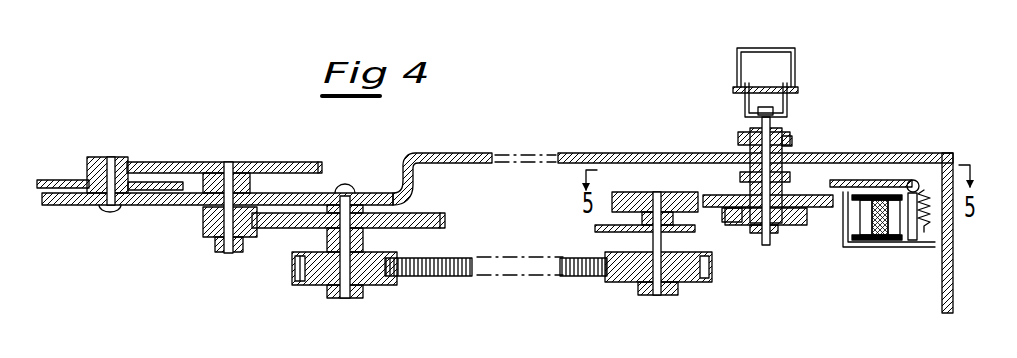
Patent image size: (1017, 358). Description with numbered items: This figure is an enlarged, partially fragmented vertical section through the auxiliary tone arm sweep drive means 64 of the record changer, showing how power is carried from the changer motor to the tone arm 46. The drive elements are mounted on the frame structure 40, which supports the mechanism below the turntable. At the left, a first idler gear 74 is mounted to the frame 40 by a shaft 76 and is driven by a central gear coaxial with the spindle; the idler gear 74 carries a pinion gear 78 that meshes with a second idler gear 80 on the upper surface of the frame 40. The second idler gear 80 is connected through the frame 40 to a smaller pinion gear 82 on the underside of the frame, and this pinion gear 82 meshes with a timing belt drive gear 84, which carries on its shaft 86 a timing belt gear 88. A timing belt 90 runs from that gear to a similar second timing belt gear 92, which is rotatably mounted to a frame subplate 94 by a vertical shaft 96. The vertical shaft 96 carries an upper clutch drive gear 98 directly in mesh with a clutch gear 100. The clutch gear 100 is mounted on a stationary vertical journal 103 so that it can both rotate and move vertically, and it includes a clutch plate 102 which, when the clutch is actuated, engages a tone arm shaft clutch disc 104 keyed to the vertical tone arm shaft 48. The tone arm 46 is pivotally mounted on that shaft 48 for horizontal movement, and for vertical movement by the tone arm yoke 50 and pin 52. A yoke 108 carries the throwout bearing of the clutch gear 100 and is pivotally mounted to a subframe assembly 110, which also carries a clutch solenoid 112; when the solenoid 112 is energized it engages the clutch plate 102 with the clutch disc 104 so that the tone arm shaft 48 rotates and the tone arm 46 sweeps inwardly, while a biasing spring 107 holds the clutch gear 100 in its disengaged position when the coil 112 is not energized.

The frame structure 40 is at (431, 153).
The tone arm 46 is at (778, 48).
The tone arm shaft 48 is at (790, 121).
The tone arm yoke 50 is at (745, 108).
The pin 52 is at (735, 88).
The auxiliary tone arm sweep drive means 64 is at (558, 126).
The first idler gear 74 is at (43, 180).
The shaft 76 is at (106, 213).
The pinion gear 78 is at (87, 165).
The second idler gear 80 is at (152, 162).
The pinion gear 82 is at (228, 253).
The timing belt drive gear 84 is at (425, 213).
The shaft 86 is at (344, 298).
The timing belt gear 88 is at (378, 287).
The timing belt 90 is at (446, 277).
The second timing belt gear 92 is at (630, 283).
The frame subplate 94 is at (597, 229).
The vertical shaft 96 is at (657, 295).
The clutch drive gear 98 is at (627, 192).
The clutch gear 100 is at (718, 195).
The clutch plate 102 is at (741, 222).
The stationary vertical journal 103 is at (794, 141).
The tone arm shaft clutch disc 104 is at (787, 226).
The biasing spring 107 is at (926, 232).
The yoke 108 is at (860, 180).
The subframe assembly 110 is at (901, 240).
The clutch solenoid 112 is at (913, 180).